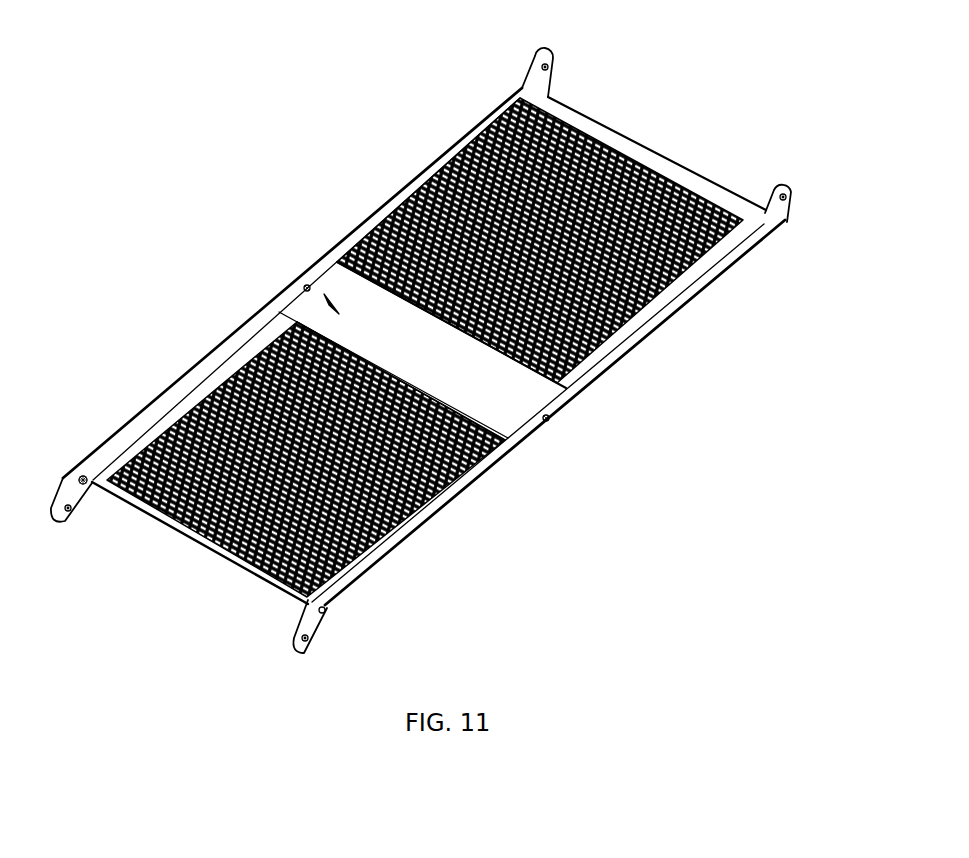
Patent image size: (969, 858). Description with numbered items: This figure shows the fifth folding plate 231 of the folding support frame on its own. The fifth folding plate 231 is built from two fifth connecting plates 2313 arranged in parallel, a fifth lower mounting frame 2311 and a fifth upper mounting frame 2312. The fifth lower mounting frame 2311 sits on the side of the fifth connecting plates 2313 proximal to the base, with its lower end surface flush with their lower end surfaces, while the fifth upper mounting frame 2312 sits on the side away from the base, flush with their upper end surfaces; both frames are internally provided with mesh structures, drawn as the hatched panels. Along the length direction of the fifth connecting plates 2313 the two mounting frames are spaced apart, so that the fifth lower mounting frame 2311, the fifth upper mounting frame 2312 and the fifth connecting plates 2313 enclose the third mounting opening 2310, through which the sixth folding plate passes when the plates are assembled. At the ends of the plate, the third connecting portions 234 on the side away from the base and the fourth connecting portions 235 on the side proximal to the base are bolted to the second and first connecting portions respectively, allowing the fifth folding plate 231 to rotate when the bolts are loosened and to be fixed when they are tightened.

The fifth folding plate 231 is at (603, 372).
The fifth connecting plates 2313 is at (160, 392).
The fifth upper mounting frame 2312 is at (622, 145).
The fifth lower mounting frame 2311 is at (190, 540).
The third mounting opening 2310 is at (300, 272).
The fourth connecting portions 235 is at (547, 52).
The third connecting portions 234 is at (72, 510).